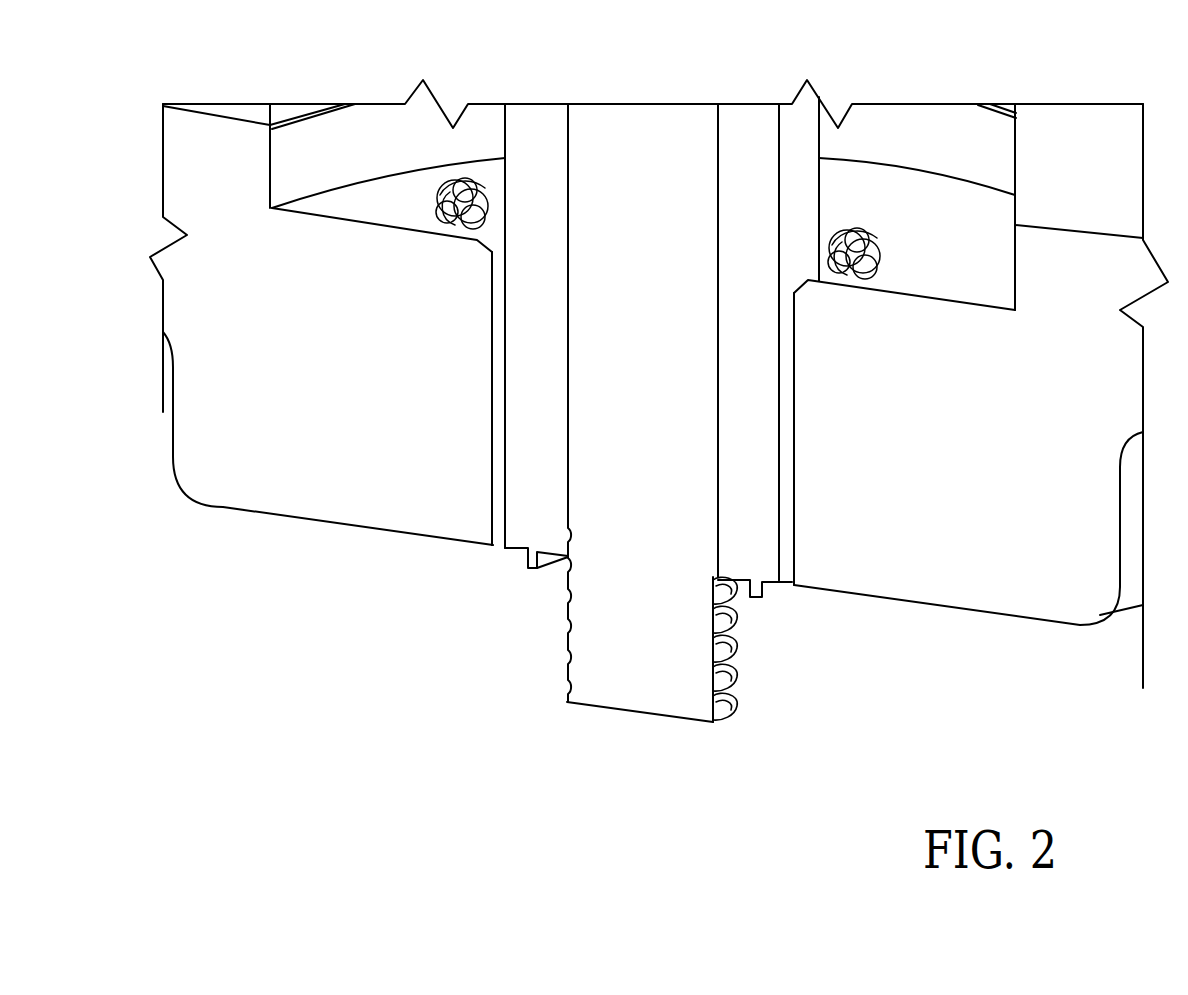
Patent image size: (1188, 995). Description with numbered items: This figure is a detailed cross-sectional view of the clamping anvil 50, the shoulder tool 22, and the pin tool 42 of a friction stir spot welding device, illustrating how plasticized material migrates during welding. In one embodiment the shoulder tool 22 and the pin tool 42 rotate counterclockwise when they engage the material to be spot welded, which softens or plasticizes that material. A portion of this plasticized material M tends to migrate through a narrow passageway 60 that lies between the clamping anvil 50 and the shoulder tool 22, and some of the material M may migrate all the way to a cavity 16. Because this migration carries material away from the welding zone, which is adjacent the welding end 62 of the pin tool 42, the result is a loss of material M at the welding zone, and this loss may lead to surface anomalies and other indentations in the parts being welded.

The cavity 16 is at (912, 205).
The shoulder tool 22 is at (753, 125).
The pin tool 42 is at (643, 125).
The clamping anvil 50 is at (192, 428).
The narrow passageway 60 is at (500, 243).
The welding end 62 is at (567, 700).
The material M is at (435, 197).